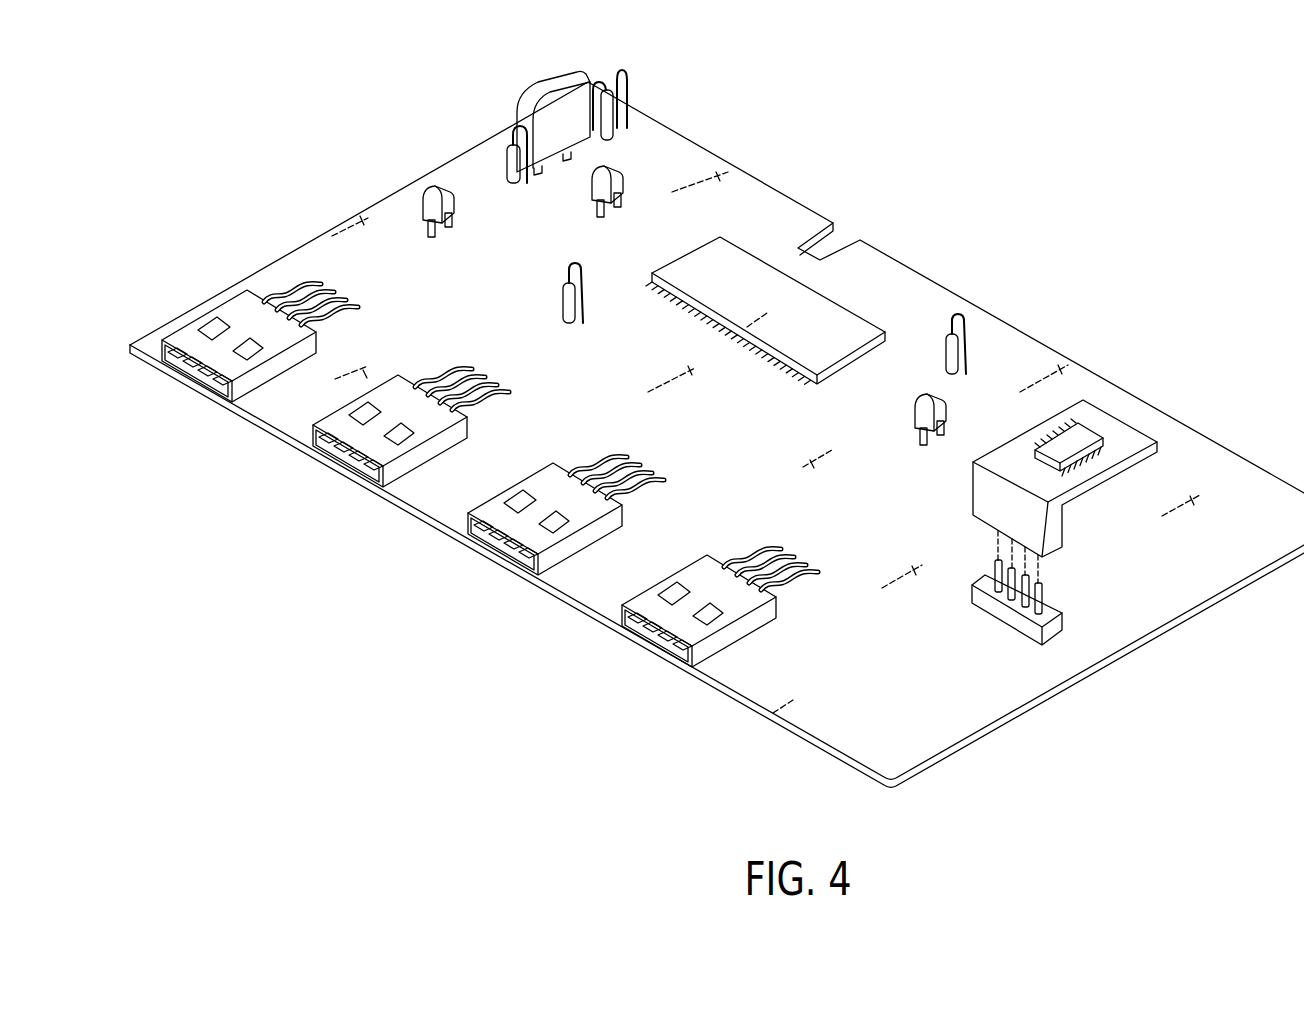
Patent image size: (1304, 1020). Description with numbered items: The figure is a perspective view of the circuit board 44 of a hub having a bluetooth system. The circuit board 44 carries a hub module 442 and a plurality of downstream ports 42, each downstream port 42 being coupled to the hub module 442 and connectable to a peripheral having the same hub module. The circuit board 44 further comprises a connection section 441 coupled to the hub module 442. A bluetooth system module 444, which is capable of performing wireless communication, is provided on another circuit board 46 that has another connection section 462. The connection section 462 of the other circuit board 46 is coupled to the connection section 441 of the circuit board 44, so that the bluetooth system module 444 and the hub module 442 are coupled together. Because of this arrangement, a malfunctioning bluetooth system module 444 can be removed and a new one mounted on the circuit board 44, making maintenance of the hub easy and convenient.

The circuit board 44 is at (298, 203).
The downstream port 42 is at (490, 513).
The hub module 442 is at (805, 335).
The another circuit board 46 is at (1124, 500).
The bluetooth system module 444 is at (1107, 430).
The connection section 462 is at (1054, 534).
The connection section 441 is at (1052, 630).